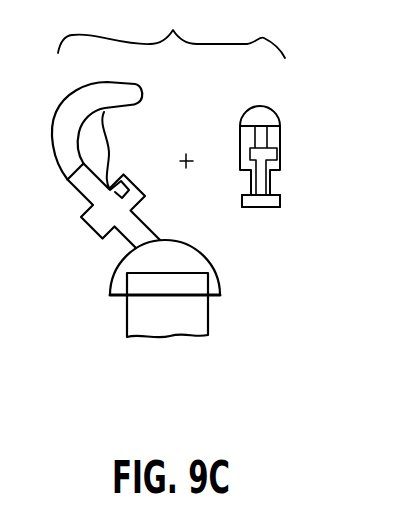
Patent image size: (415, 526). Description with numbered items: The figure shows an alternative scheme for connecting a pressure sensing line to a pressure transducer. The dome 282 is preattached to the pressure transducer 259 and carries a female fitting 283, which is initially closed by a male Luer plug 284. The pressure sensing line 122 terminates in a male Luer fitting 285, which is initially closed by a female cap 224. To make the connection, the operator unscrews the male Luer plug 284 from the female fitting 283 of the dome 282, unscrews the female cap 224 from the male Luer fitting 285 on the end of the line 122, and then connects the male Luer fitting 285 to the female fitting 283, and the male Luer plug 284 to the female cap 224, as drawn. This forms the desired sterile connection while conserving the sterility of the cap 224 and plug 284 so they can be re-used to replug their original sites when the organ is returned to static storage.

The line 122 is at (126, 91).
The male Luer fitting 285 is at (104, 140).
The female fitting 283 is at (104, 231).
The dome 282 is at (170, 256).
The pressure transducer 259 is at (143, 319).
The female cap 224 is at (263, 118).
The male Luer plug 284 is at (262, 197).